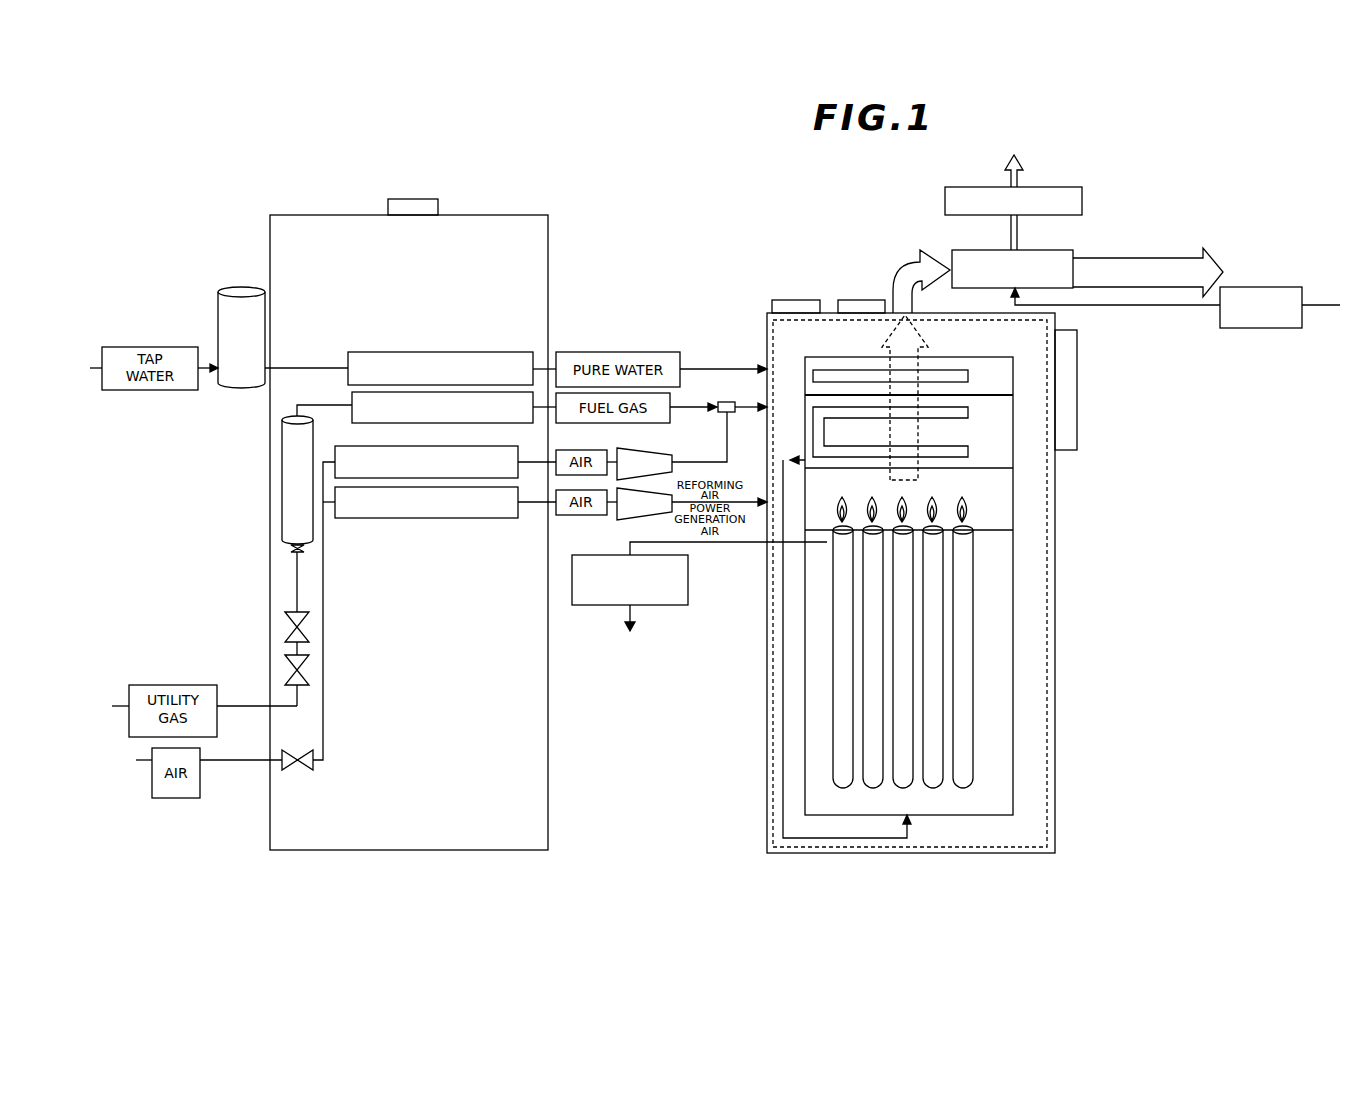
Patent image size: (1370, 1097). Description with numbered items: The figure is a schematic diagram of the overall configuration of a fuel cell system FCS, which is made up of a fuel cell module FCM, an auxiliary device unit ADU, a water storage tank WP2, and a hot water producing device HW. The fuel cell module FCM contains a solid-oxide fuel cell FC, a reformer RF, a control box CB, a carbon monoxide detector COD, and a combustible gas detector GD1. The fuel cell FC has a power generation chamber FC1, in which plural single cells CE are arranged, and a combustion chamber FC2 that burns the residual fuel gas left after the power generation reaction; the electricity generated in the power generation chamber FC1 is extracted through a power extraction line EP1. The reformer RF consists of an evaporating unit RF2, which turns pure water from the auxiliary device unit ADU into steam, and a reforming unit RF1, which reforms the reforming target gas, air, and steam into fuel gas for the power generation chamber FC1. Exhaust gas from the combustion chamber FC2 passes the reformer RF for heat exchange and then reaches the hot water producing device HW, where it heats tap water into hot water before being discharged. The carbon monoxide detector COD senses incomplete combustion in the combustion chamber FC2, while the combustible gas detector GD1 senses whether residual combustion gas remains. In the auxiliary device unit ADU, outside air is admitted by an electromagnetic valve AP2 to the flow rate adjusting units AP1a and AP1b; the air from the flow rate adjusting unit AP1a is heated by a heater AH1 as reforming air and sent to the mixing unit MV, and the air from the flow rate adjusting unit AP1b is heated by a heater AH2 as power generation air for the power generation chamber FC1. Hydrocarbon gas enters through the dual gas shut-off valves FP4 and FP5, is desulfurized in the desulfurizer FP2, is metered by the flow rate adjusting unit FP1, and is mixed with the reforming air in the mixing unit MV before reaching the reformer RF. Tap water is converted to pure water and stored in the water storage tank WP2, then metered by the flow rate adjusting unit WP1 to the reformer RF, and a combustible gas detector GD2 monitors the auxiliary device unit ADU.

The combustible gas detector GD2 is at (415, 199).
The water storage tank WP2 is at (240, 287).
The flow rate adjusting unit WP1 is at (455, 352).
The flow rate adjusting unit FP1 is at (350, 397).
The desulfurizer FP2 is at (282, 485).
The gas shut-off valve FP4 is at (290, 630).
The gas shut-off valve FP5 is at (290, 672).
The flow rate adjusting unit AP1a is at (455, 448).
The flow rate adjusting unit AP1b is at (478, 519).
The electromagnetic valve AP2 is at (292, 768).
The auxiliary device unit ADU is at (562, 763).
The fuel cell system FCS is at (745, 173).
The carbon monoxide detector COD is at (790, 300).
The combustible gas detector GD1 is at (850, 300).
The mixing unit MV is at (727, 400).
The heater AH1 is at (656, 453).
The heater AH2 is at (632, 517).
The power extraction line EP1 is at (737, 545).
The hot water producing device HW is at (1040, 250).
The control box CB is at (1075, 372).
The evaporating unit RF2 is at (1003, 377).
The reforming unit RF1 is at (990, 433).
The reformer RF is at (993, 413).
The combustion chamber FC2 is at (985, 500).
The fuel cell FC is at (980, 576).
The power generation chamber FC1 is at (973, 657).
The single cell CE is at (963, 677).
The fuel cell module FCM is at (1068, 793).